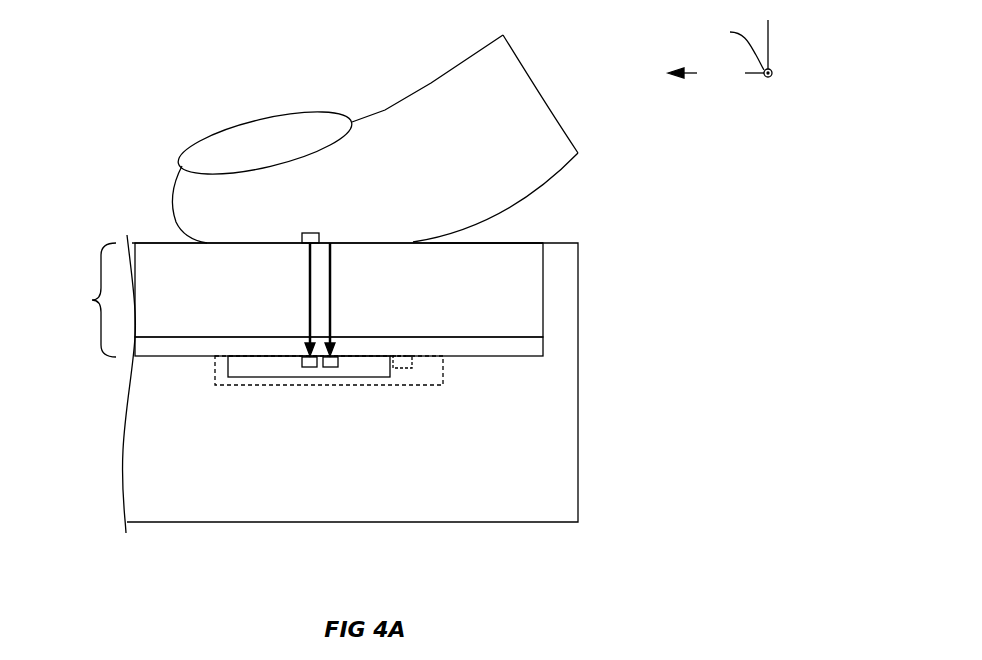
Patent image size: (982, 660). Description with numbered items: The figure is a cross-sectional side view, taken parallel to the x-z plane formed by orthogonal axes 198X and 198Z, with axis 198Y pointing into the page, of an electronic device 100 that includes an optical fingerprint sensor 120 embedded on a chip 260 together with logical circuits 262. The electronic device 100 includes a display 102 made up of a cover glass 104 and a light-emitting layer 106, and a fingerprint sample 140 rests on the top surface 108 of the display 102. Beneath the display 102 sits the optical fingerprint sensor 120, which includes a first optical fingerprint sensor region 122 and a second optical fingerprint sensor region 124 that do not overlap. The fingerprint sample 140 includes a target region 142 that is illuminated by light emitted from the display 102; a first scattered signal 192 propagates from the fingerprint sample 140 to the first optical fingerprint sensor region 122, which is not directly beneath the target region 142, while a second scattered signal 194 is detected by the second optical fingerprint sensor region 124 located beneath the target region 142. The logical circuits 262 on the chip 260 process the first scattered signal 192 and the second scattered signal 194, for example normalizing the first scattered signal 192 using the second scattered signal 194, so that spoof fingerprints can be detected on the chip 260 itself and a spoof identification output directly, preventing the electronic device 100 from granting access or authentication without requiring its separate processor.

The electronic device 100 is at (632, 288).
The display 102 is at (78, 300).
The cover glass 104 is at (153, 257).
The light-emitting layer 106 is at (530, 347).
The top surface 108 is at (517, 241).
The optical fingerprint sensor 120 is at (275, 378).
The first optical fingerprint sensor region 122 is at (330, 368).
The second optical fingerprint sensor region 124 is at (308, 368).
The fingerprint sample 140 is at (273, 212).
The target region 142 is at (309, 233).
The first scattered signal 192 is at (333, 278).
The second scattered signal 194 is at (309, 315).
The axis 198X is at (716, 73).
The axis 198Y is at (724, 44).
The axis 198Z is at (770, 38).
The chip 260 is at (225, 386).
The logical circuits 262 is at (398, 370).